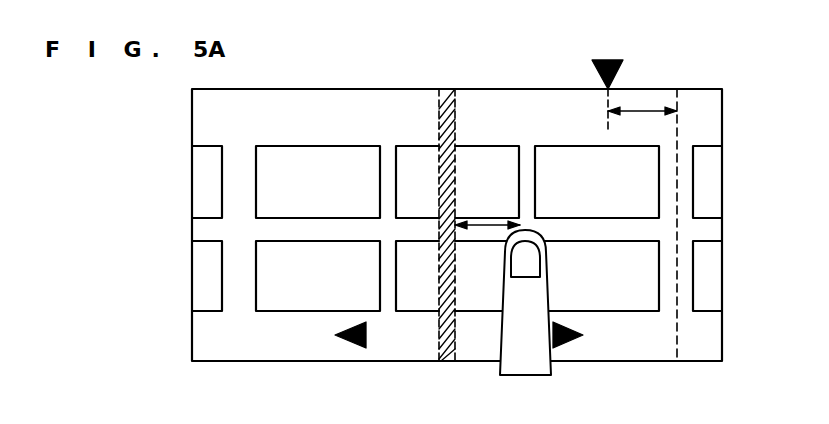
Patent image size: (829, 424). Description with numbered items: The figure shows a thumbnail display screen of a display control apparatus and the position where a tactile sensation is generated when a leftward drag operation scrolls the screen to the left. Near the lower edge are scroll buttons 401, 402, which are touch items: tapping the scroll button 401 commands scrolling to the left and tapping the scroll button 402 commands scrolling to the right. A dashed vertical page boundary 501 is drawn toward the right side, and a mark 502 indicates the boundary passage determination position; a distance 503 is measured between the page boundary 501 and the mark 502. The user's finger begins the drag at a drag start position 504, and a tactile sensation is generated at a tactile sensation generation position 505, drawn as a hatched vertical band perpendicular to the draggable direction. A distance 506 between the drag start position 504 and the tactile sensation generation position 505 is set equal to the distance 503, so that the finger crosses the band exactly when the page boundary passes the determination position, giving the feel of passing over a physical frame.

The scroll button 401 is at (352, 348).
The scroll button 402 is at (565, 348).
The page boundary 501 is at (677, 87).
The mark 502 is at (608, 60).
The distance 503 is at (645, 109).
The drag start position 504 is at (528, 258).
The tactile sensation generation position 505 is at (447, 362).
The distance 506 is at (488, 226).